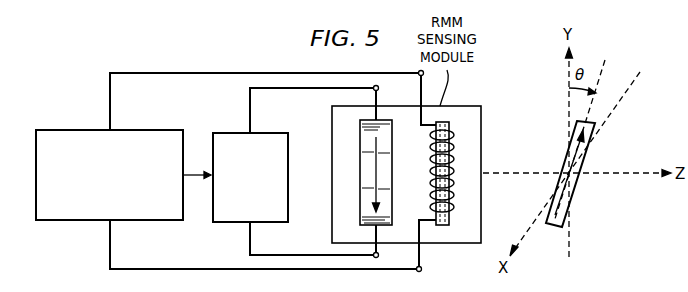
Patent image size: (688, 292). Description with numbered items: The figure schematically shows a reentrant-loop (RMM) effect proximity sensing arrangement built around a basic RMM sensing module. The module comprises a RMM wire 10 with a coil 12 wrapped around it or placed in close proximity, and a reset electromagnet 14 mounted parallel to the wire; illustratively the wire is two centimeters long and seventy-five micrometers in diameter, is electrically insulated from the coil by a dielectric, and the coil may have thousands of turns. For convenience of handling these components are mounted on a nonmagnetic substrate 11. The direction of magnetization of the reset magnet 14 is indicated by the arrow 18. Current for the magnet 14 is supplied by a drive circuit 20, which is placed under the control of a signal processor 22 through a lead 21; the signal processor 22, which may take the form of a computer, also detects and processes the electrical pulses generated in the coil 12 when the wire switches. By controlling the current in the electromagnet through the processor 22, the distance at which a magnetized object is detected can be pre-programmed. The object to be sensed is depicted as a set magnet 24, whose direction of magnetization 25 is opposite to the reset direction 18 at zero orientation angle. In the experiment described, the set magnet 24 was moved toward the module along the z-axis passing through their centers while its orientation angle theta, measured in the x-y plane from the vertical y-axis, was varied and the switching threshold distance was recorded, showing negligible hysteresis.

The RMM wire 10 is at (453, 128).
The nonmagnetic substrate 11 is at (460, 233).
The coil 12 is at (456, 152).
The reset electromagnet 14 is at (382, 123).
The arrow indicating direction of magnetization 18 is at (377, 170).
The drive circuit 20 is at (212, 222).
The lead 21 is at (194, 172).
The signal processor 22 is at (40, 130).
The set magnet 24 is at (593, 153).
The direction of magnetization of the set magnet 25 is at (566, 208).